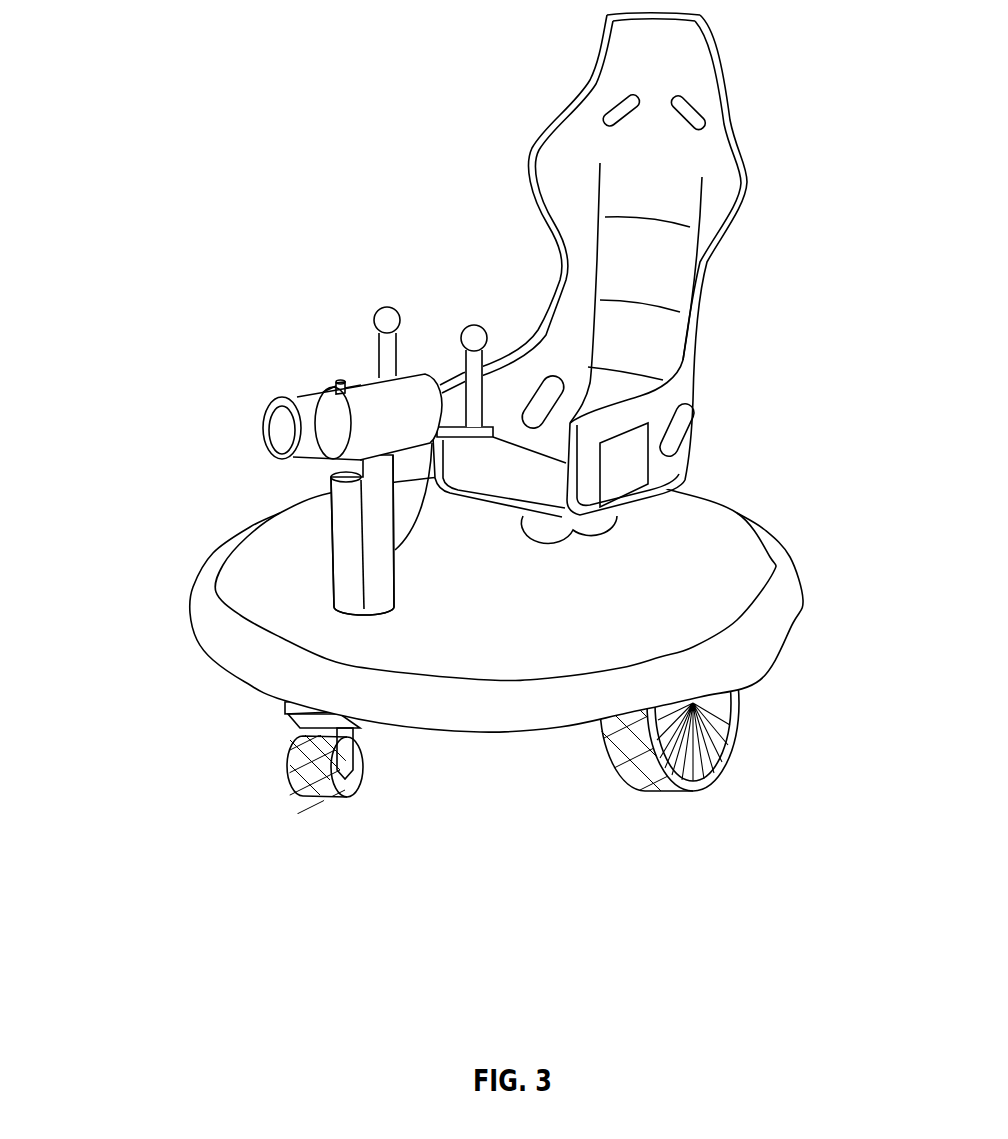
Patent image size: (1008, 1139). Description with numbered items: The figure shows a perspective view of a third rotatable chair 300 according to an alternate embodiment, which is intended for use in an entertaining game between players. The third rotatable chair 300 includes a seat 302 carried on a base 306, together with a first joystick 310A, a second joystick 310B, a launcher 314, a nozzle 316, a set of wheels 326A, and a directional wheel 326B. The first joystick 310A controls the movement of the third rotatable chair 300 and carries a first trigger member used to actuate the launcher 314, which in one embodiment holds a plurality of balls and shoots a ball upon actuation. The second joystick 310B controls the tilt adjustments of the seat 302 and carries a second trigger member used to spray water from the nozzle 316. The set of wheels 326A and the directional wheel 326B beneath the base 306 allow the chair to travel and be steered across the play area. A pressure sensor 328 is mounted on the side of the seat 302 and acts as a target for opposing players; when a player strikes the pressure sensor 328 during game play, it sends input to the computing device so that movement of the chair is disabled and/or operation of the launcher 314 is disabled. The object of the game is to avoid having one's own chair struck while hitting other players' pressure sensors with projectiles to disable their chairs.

The third rotatable chair 300 is at (386, 967).
The seat 302 is at (730, 103).
The base 306 is at (191, 605).
The first joystick 310A is at (374, 320).
The second joystick 310B is at (469, 327).
The launcher 314 is at (331, 548).
The nozzle 316 is at (335, 386).
The set of wheels 326A is at (733, 722).
The directional wheel 326B is at (287, 770).
The pressure sensor 328 is at (648, 482).